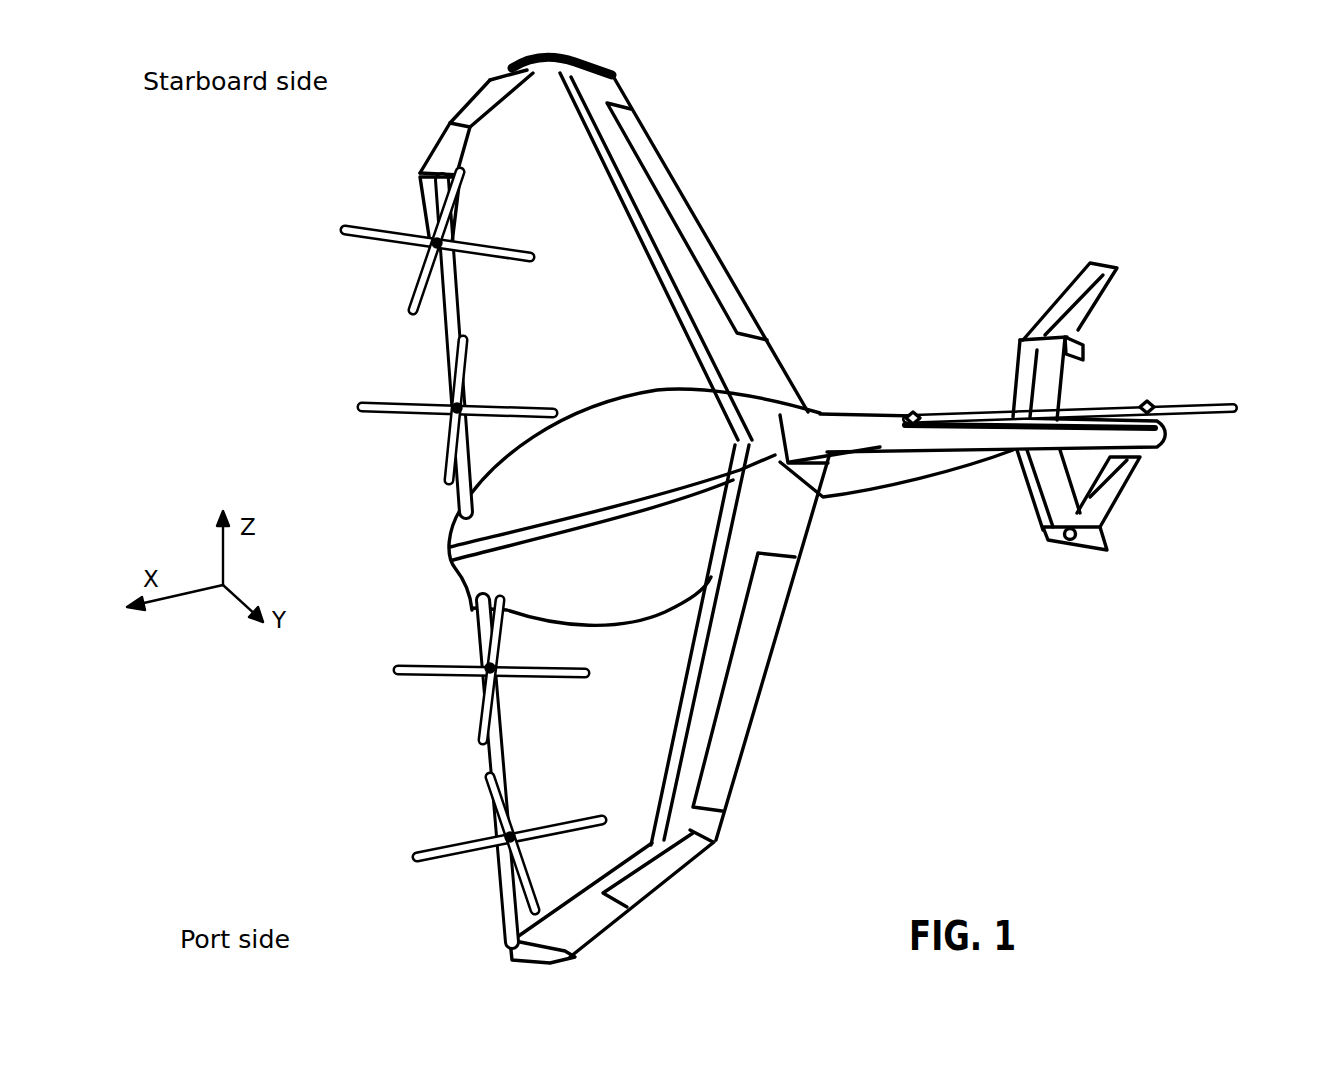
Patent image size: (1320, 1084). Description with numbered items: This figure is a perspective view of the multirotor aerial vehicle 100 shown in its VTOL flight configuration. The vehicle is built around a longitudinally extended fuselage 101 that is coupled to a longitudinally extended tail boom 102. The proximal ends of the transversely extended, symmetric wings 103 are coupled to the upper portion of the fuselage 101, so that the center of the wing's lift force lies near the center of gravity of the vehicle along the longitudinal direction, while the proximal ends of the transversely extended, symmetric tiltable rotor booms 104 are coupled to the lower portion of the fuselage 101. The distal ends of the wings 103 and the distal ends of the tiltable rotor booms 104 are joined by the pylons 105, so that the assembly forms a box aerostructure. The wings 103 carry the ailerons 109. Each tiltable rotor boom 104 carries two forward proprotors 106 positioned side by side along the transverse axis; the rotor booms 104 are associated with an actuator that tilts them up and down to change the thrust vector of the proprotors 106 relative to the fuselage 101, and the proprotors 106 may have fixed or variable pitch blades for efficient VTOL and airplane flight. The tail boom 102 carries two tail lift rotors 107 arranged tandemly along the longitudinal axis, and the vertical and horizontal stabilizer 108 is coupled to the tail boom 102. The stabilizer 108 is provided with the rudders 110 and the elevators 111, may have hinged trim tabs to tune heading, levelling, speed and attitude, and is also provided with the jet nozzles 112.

The multirotor aerial vehicle 100 is at (889, 146).
The fuselage 101 is at (683, 393).
The tail boom 102 is at (942, 465).
The wings 103 is at (605, 100).
The tiltable rotor booms 104 is at (440, 318).
The pylons 105 is at (473, 90).
The forward proprotors 106 is at (418, 290).
The tail lift rotors 107 is at (880, 418).
The vertical and horizontal stabilizer 108 is at (1085, 357).
The ailerons 109 is at (718, 245).
The rudders 110 is at (1100, 302).
The elevators 111 is at (1020, 360).
The jet nozzles 112 is at (1068, 545).